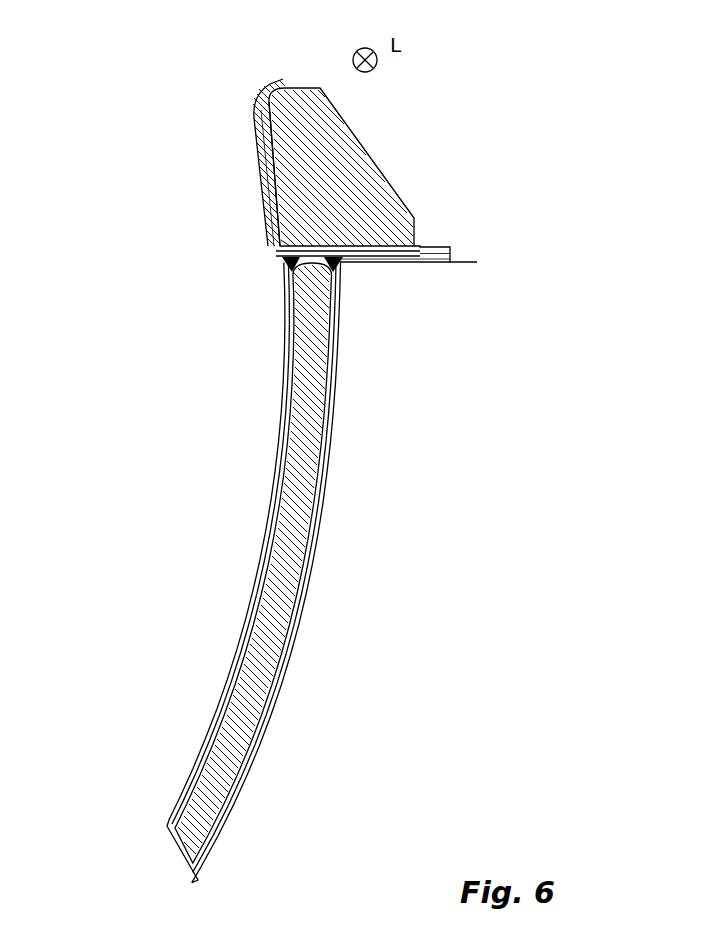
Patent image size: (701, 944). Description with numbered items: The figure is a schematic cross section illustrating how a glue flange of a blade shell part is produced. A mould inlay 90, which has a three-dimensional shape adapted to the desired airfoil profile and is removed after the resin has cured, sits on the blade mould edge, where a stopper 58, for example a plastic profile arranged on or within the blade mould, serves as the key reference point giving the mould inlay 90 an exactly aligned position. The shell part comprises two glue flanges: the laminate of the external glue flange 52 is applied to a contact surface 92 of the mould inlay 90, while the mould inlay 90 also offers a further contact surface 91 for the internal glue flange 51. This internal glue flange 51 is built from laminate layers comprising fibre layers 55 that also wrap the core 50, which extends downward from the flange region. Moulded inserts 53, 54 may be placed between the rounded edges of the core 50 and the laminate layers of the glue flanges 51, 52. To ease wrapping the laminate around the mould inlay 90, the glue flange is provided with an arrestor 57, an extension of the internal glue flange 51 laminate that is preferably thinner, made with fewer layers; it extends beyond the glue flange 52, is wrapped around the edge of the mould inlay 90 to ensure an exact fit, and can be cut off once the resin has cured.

The core 50 is at (293, 577).
The internal glue flange 51 is at (275, 185).
The external glue flange 52 is at (421, 251).
The moulded insert 53 is at (290, 266).
The moulded insert 54 is at (350, 263).
The fibre layers 55 is at (283, 410).
The arrestor 57 is at (258, 100).
The stopper 58 is at (428, 246).
The mould inlay 90 is at (340, 165).
The contact surface 91 is at (272, 205).
The contact surface 92 is at (368, 252).